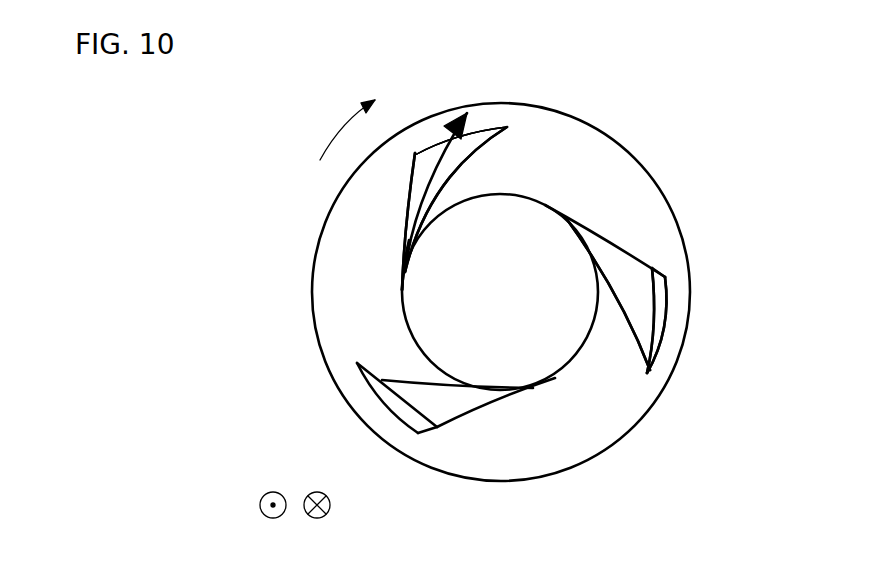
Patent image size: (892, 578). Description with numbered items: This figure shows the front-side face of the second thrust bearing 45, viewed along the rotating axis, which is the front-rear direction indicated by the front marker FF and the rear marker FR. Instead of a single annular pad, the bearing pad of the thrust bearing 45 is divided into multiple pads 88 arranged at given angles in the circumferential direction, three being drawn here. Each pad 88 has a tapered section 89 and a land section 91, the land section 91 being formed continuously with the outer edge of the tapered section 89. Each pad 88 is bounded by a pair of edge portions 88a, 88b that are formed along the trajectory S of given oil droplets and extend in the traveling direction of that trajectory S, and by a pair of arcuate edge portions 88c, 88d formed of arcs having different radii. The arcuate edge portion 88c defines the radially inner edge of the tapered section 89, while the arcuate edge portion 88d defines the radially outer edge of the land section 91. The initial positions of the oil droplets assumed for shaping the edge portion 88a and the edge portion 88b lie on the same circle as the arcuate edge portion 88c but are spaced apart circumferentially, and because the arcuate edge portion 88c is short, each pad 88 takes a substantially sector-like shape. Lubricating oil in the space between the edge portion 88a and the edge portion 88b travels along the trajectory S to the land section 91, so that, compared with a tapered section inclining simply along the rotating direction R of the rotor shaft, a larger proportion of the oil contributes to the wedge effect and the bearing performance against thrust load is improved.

The thrust bearing 45 is at (509, 100).
The pad 88 is at (398, 380).
The edge portion 88a is at (407, 213).
The edge portion 88b is at (460, 183).
The arcuate edge portion 88c is at (414, 282).
The arcuate edge portion 88d is at (425, 150).
The tapered section 89 is at (453, 167).
The land section 91 is at (503, 137).
The trajectory S is at (450, 183).
The rotating direction R is at (333, 136).
The front direction FF is at (273, 494).
The rear direction FR is at (316, 494).